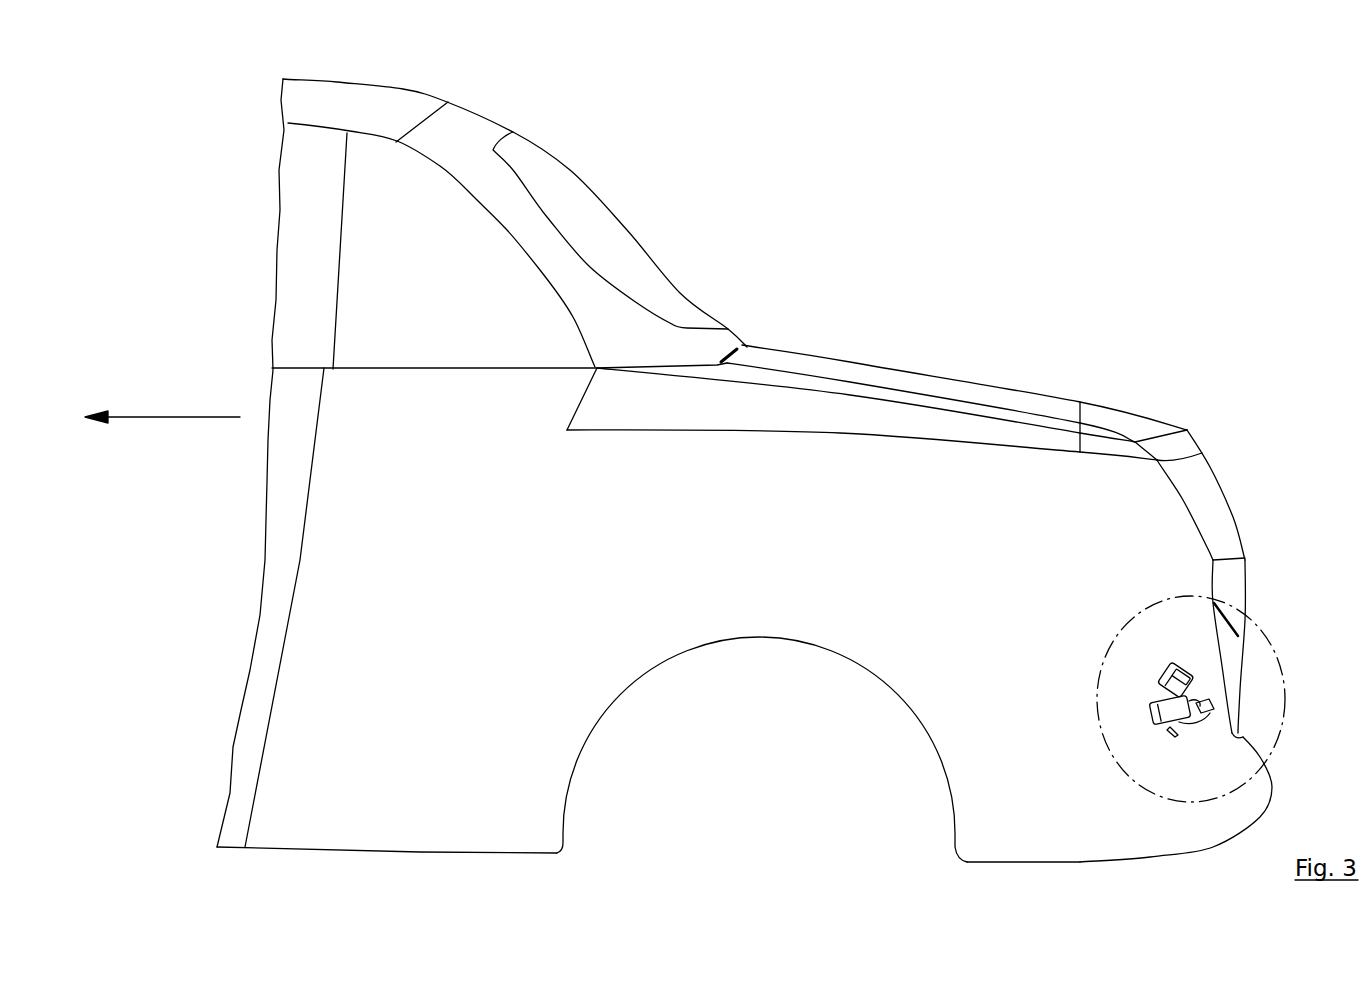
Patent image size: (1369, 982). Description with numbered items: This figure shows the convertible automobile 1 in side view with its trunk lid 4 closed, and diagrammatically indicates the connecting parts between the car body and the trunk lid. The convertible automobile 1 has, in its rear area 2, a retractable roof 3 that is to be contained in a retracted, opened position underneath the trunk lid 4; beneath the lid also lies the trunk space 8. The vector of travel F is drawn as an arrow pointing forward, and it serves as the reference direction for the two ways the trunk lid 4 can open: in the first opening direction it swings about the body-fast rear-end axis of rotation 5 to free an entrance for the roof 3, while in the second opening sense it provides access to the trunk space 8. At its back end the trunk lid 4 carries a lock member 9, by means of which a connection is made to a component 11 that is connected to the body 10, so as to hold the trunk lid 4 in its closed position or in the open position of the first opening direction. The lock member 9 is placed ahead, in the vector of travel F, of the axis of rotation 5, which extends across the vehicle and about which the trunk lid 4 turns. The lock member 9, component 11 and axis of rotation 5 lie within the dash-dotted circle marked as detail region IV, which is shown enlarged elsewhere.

The convertible automobile 1 is at (715, 129).
The rear area 2 is at (937, 240).
The retractable roof 3 is at (478, 127).
The trunk lid 4 is at (974, 392).
The axis of rotation 5 is at (1217, 709).
The trunk space 8 is at (1004, 534).
The lock member 9 is at (1180, 686).
The body 10 is at (983, 733).
The component 11 is at (1183, 753).
The vector of travel F is at (177, 417).
The detail region IV is at (1262, 635).